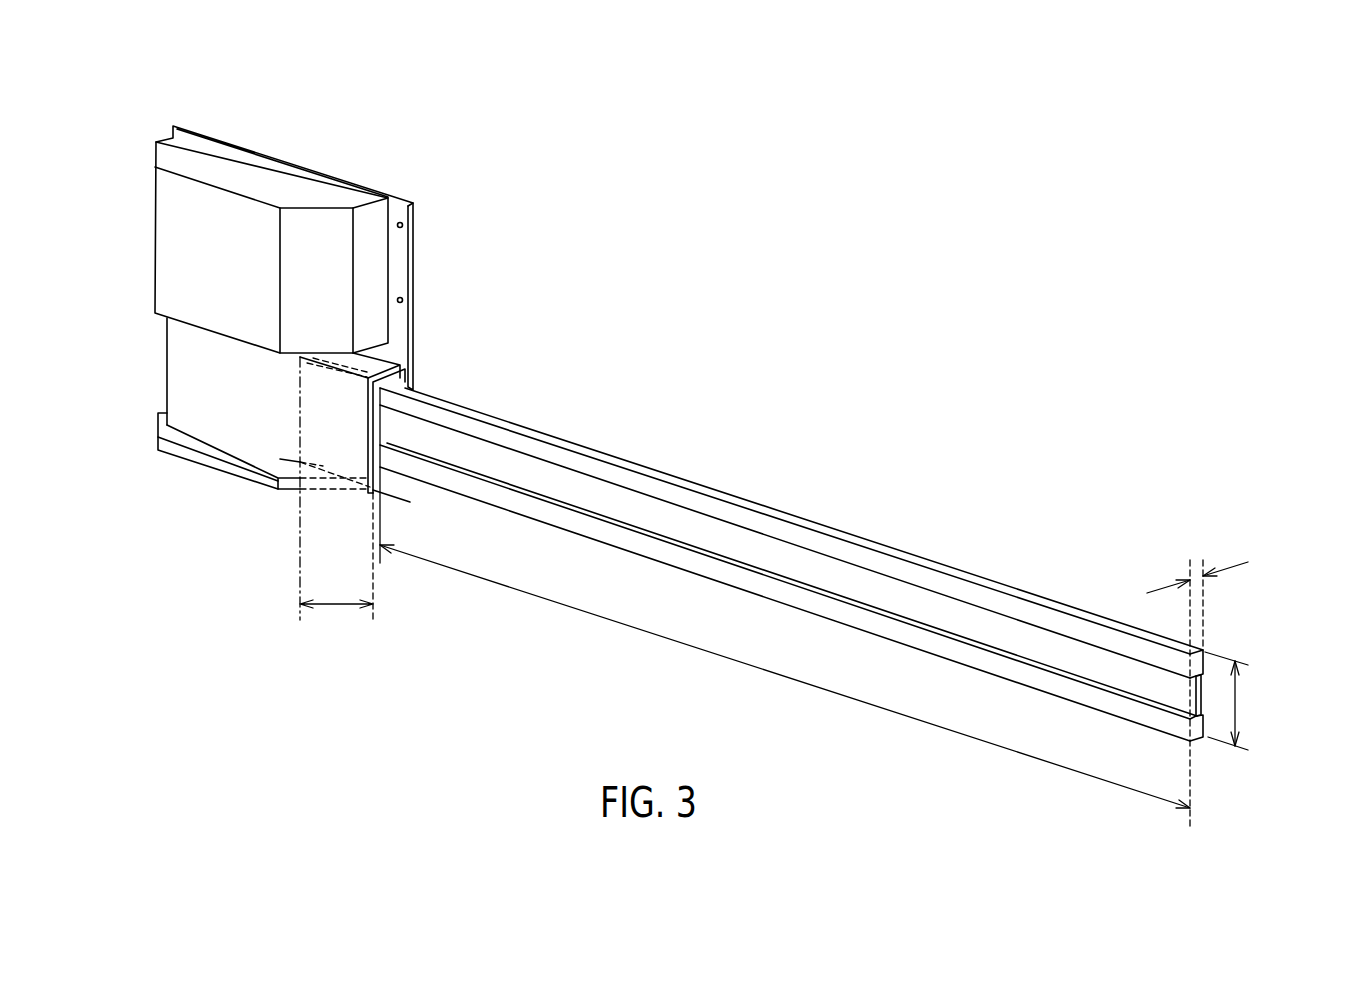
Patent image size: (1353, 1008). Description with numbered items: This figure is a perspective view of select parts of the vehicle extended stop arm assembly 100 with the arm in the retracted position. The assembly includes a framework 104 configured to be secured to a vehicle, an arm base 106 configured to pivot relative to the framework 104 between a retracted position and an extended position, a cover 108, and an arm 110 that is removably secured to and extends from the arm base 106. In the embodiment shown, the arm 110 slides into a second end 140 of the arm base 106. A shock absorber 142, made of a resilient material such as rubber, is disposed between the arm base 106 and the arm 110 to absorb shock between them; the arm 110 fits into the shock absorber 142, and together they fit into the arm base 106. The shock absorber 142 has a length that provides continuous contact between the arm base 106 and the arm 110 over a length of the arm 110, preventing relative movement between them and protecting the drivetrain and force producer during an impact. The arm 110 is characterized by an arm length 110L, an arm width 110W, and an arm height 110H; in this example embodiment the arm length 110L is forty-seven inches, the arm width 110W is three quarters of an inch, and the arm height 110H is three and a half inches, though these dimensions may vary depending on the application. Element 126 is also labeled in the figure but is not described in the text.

The vehicle extended stop arm assembly 100 is at (752, 292).
The framework 104 is at (402, 260).
The arm base 106 is at (255, 420).
The cover 108 is at (276, 181).
The arm 110 is at (845, 540).
The arm height 110H is at (1235, 703).
The arm length 110L is at (782, 678).
The arm width 110W is at (1195, 577).
The body 126 is at (177, 375).
The second end 140 is at (358, 433).
The shock absorber 142 is at (398, 375).